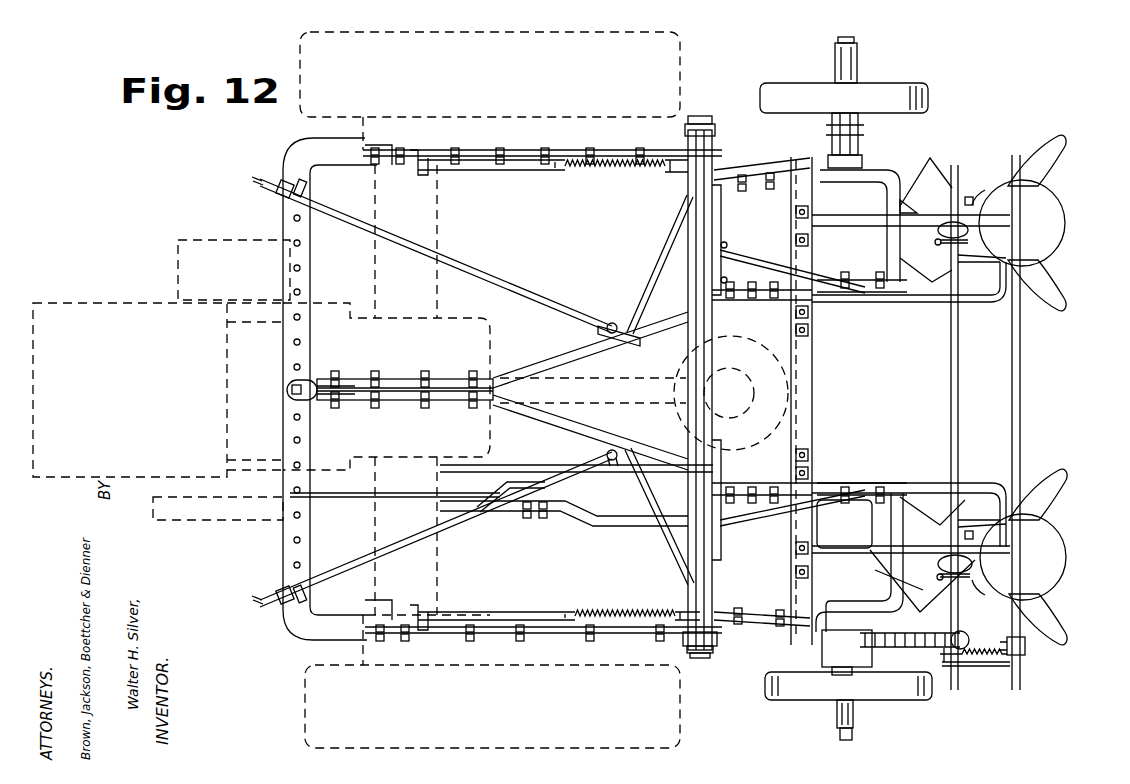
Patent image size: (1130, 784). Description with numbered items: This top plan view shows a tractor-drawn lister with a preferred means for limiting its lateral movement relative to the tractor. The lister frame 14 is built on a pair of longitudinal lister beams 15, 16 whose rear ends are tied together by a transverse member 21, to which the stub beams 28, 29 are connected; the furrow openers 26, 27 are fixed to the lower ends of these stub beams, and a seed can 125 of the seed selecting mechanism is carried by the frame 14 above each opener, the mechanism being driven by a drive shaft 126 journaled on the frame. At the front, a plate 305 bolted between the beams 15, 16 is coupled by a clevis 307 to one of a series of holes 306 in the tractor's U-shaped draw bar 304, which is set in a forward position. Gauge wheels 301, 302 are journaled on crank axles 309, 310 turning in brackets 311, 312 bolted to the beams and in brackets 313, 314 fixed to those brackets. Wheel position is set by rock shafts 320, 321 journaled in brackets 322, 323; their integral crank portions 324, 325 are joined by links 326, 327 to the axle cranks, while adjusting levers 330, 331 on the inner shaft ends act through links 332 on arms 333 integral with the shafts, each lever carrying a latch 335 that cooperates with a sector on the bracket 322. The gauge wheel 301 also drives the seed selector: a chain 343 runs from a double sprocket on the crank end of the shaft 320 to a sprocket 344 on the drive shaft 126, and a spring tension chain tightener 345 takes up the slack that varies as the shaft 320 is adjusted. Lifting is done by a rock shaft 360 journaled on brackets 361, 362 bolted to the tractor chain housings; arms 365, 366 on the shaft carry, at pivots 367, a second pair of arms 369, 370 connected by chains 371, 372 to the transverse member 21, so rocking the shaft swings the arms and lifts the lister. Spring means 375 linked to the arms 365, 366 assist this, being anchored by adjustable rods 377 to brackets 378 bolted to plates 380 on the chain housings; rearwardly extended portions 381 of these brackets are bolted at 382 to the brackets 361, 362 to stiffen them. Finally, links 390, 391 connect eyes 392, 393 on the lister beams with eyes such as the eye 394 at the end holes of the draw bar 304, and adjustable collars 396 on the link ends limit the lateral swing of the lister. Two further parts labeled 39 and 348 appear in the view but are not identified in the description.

The lister frame 14 is at (1024, 386).
The frame member 15 is at (555, 360).
The frame member 16 is at (556, 418).
The transverse member 21 is at (810, 418).
The furrow opener 26 is at (987, 188).
The furrow opener 27 is at (1025, 492).
The stub beam 28 is at (820, 220).
The stub beam 29 is at (828, 556).
The clamp nut 39 is at (288, 182).
The seed can 125 is at (1048, 212).
The drive shaft 126 is at (951, 398).
The gauge wheel 301 is at (872, 692).
The gauge wheel 302 is at (928, 98).
The U-shaped draw bar 304 is at (284, 545).
The plate 305 is at (355, 402).
The holes 306 is at (294, 440).
The clevis 307 is at (312, 385).
The crank axle 309 is at (750, 624).
The crank axle 310 is at (772, 165).
The bracket 311 is at (665, 545).
The bracket 312 is at (655, 268).
The bracket 313 is at (690, 505).
The bracket 314 is at (690, 302).
The rock shaft 320 is at (875, 512).
The rock shaft 321 is at (880, 272).
The bracket 322 is at (918, 304).
The bracket 323 is at (918, 385).
The crank portion 324 is at (900, 601).
The crank portion 325 is at (868, 176).
The link 326 is at (822, 636).
The link 327 is at (832, 148).
The adjusting lever 330 is at (790, 515).
The adjusting lever 331 is at (775, 268).
The link 332 is at (927, 523).
The arm 333 is at (862, 279).
The latch 335 is at (870, 483).
The chain 343 is at (895, 649).
The sprocket 344 is at (1008, 644).
The spring tension chain tightener 345 is at (955, 668).
The angle bracket 348 is at (416, 176).
The rock shaft 360 is at (700, 362).
The bracket 361 is at (622, 636).
The bracket 362 is at (542, 144).
The arm 365 is at (690, 606).
The arm 366 is at (690, 176).
The pivot 367 is at (722, 158).
The arm 369 is at (742, 608).
The arm 370 is at (744, 192).
The chain 371 is at (782, 610).
The chain 372 is at (779, 193).
The spring means 375 is at (590, 170).
The adjustable rod 377 is at (485, 171).
The bracket 378 is at (418, 610).
The plate 380 is at (390, 160).
The rearwardly extended portion 381 is at (520, 171).
The bolt 382 is at (691, 661).
The link 390 is at (455, 265).
The link 391 is at (440, 522).
The eye 392 is at (614, 474).
The eye 393 is at (611, 322).
The eye 394 is at (289, 596).
The adjustable collar 396 is at (280, 190).